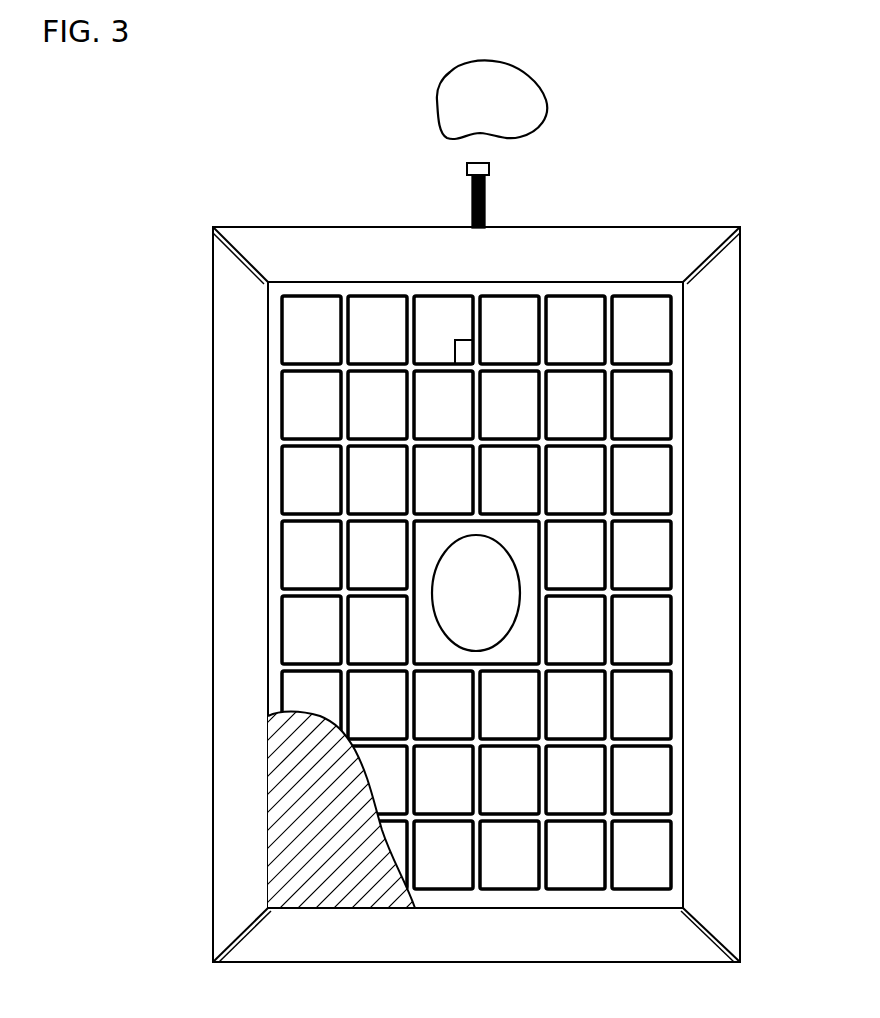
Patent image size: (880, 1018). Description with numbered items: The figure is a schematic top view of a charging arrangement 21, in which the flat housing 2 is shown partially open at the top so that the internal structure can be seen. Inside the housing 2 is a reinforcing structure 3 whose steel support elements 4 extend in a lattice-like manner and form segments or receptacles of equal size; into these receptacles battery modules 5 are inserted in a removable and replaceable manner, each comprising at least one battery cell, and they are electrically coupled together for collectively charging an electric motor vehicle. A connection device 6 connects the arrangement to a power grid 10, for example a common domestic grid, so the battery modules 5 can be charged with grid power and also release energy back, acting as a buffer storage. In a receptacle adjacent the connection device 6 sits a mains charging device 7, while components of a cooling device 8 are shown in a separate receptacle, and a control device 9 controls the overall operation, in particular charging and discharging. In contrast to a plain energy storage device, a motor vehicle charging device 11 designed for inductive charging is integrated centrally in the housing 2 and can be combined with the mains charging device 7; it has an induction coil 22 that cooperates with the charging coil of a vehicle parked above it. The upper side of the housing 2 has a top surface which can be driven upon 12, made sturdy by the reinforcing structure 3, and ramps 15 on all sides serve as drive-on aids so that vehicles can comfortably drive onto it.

The housing 2 is at (678, 720).
The reinforcing structure 3 is at (620, 607).
The steel support elements 4 is at (672, 593).
The battery modules 5 is at (475, 524).
The connection device 6 is at (485, 198).
The mains charging device 7 is at (310, 261).
The cooling device 8 is at (510, 330).
The control device 9 is at (465, 350).
The power grid 10 is at (512, 97).
The motor vehicle charging device 11 is at (481, 565).
The top surface which can be driven upon 12 is at (323, 814).
The ramps 15 is at (718, 843).
The charging arrangement 21 is at (732, 167).
The induction coil 22 is at (432, 590).